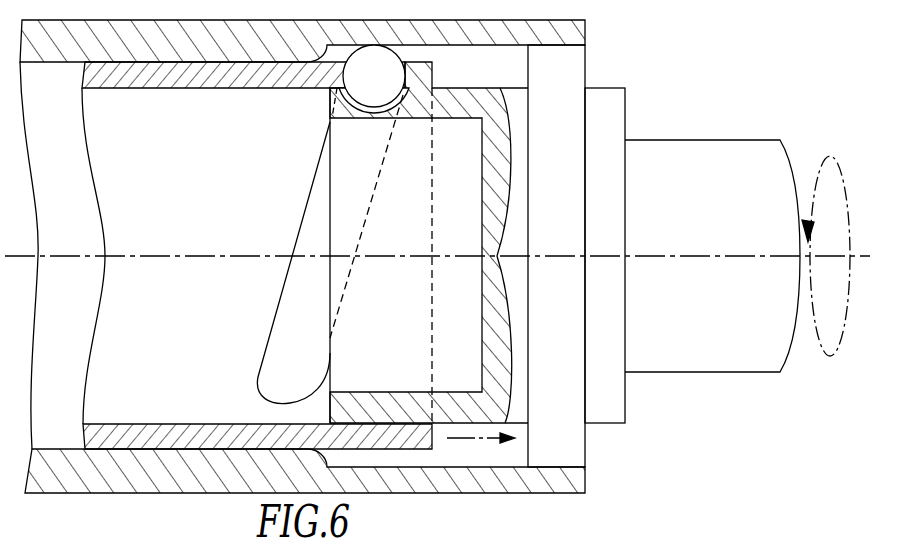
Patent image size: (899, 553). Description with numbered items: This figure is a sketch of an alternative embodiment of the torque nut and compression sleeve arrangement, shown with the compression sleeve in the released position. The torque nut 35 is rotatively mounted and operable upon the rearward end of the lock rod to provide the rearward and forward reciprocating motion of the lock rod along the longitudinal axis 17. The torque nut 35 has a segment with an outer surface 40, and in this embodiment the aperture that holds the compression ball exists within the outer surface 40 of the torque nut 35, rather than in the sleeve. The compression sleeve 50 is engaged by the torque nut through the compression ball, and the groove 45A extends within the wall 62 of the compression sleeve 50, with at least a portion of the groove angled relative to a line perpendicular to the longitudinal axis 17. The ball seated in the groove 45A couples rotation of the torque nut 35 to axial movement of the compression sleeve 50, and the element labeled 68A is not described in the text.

The longitudinal axis 17 is at (202, 256).
The wall 62 is at (257, 255).
The compression sleeve 50 is at (273, 82).
The ball detent 68A is at (400, 97).
The groove 45A is at (300, 310).
The outer surface 40 is at (522, 103).
The torque nut 35 is at (682, 157).